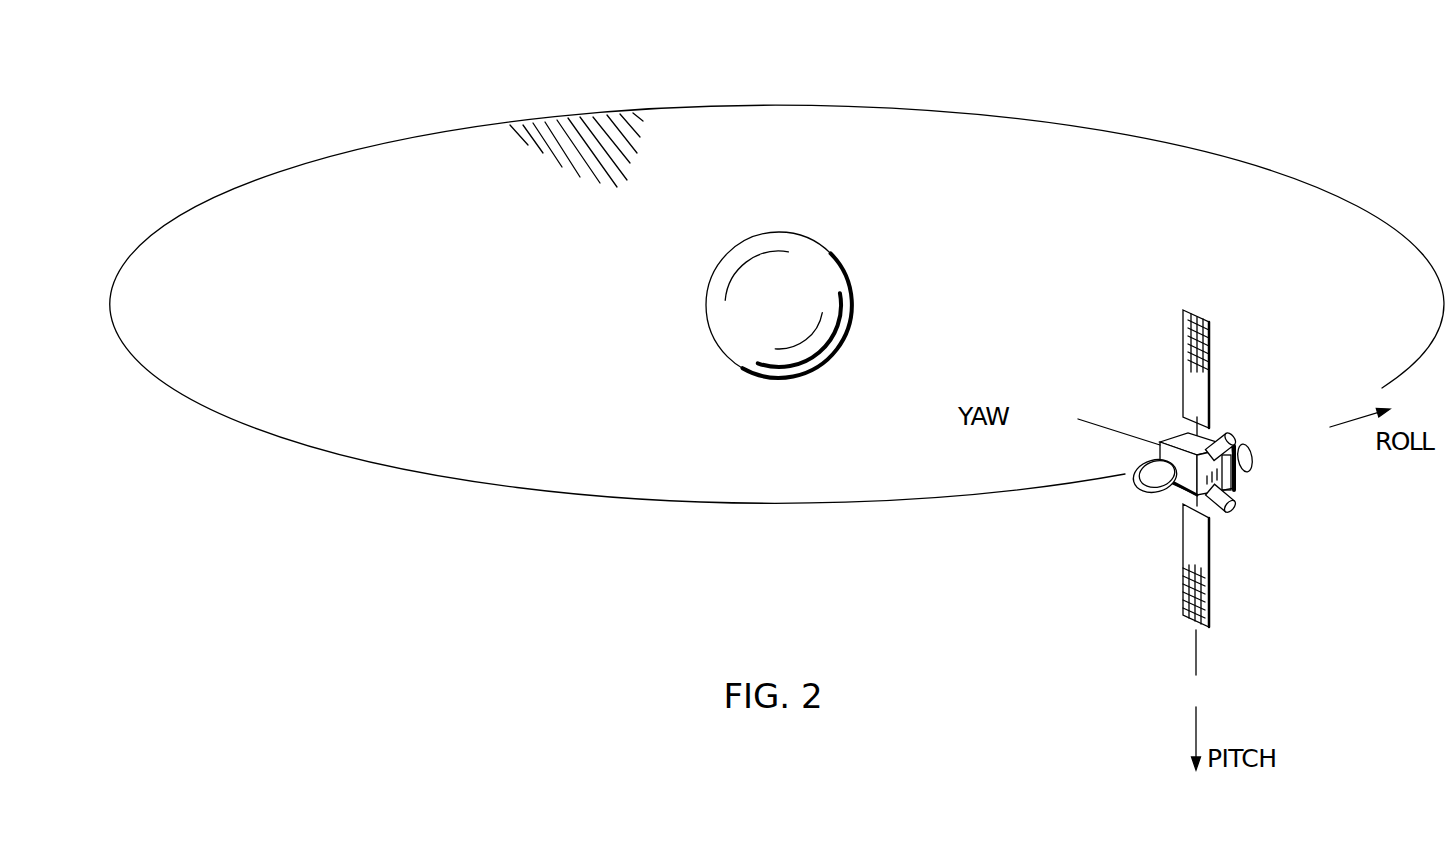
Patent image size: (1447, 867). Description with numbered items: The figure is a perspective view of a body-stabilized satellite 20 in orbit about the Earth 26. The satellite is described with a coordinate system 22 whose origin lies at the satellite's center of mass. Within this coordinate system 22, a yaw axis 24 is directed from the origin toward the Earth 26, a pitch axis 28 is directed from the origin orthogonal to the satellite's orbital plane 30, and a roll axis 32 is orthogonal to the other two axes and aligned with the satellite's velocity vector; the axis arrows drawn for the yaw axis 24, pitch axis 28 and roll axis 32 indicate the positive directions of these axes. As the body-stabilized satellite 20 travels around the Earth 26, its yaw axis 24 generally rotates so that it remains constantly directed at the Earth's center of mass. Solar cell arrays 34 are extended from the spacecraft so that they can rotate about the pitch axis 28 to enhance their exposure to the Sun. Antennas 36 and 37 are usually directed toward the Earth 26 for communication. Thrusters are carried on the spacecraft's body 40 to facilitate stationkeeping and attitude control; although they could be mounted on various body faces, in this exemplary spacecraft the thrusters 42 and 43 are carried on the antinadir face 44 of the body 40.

The body-stabilized satellite 20 is at (1128, 506).
The coordinate system 22 is at (1188, 660).
The yaw axis 24 is at (1002, 390).
The Earth 26 is at (752, 235).
The pitch axis 28 is at (1196, 722).
The orbital plane 30 is at (585, 132).
The roll axis 32 is at (1253, 445).
The solar cell arrays 34 is at (1193, 340).
The antenna 36 is at (1140, 464).
The antenna 37 is at (1253, 457).
The spacecraft body 40 is at (1174, 431).
The thruster 42 is at (1232, 442).
The thruster 43 is at (1232, 505).
The antinadir face 44 is at (1240, 470).